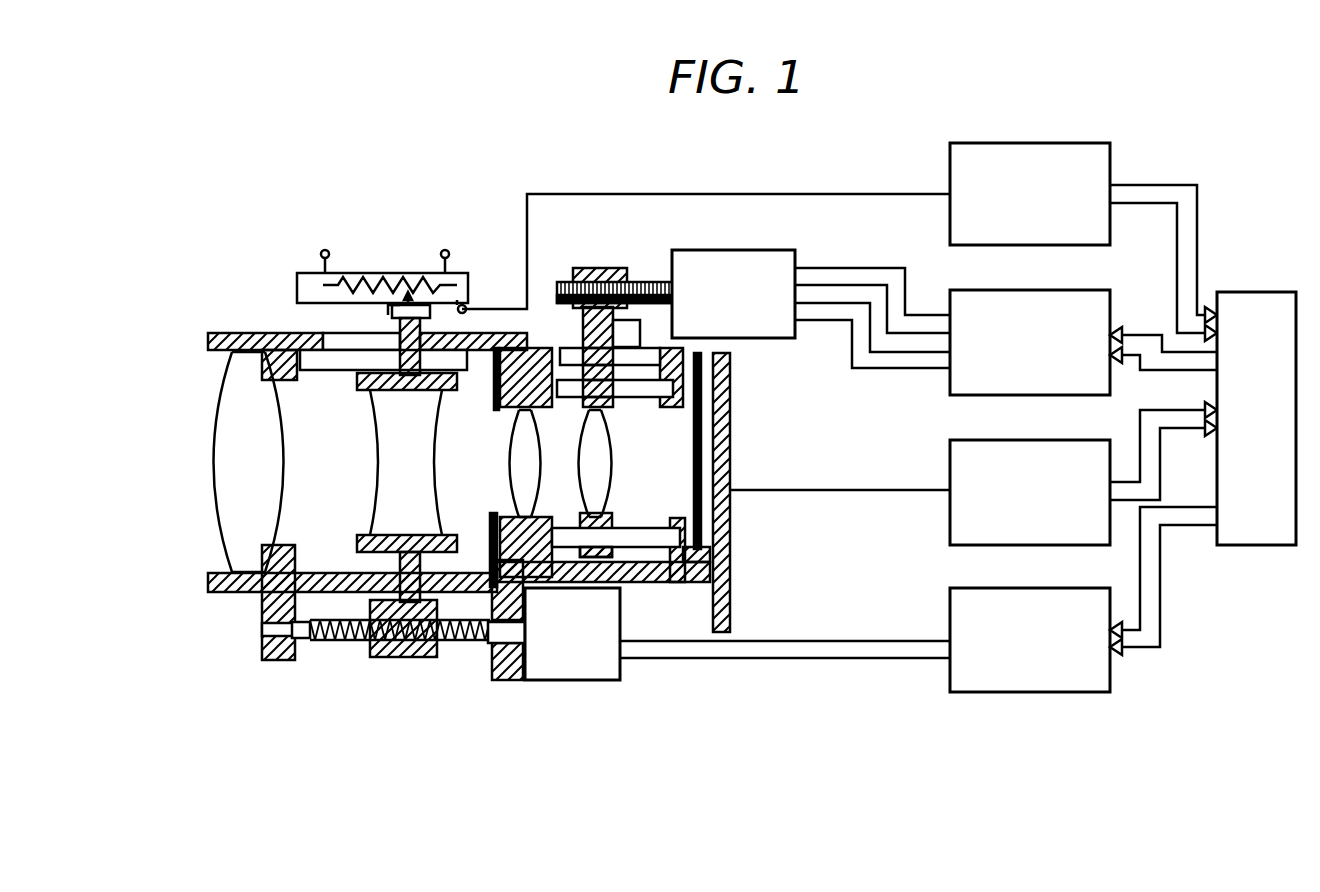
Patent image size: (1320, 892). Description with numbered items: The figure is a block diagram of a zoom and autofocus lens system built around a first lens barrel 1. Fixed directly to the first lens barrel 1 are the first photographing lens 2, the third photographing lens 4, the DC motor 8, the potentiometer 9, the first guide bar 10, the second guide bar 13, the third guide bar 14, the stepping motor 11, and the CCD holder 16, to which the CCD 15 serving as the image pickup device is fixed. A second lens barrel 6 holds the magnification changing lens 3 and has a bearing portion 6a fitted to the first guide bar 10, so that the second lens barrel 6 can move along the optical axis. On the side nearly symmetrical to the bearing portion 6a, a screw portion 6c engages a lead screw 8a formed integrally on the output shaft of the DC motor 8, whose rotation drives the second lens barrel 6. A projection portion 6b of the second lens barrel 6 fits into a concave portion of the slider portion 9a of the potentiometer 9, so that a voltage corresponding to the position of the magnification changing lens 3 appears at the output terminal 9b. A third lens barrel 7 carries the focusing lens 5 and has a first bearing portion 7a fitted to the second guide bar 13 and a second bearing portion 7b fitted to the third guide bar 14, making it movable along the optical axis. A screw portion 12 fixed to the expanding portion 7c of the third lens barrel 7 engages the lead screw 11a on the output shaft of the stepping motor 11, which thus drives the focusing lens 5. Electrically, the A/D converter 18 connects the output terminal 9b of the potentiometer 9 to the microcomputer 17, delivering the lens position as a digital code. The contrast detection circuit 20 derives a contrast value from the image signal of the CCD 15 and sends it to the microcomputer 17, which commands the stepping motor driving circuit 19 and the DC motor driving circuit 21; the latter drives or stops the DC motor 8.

The first lens barrel 1 is at (216, 594).
The first photographing lens 2 is at (204, 470).
The magnification changing lens 3 is at (373, 470).
The third photographing lens 4 is at (506, 470).
The focusing lens 5 is at (588, 475).
The second lens barrel 6 is at (389, 508).
The bearing portion 6a is at (398, 378).
The projection portion 6b is at (407, 300).
The screw portion 6c is at (400, 655).
The third lens barrel 7 is at (578, 405).
The first bearing portion 7a is at (627, 410).
The second bearing portion 7b is at (612, 550).
The expanding portion 7c is at (612, 330).
The DC motor 8 is at (623, 672).
The lead screw 8a is at (335, 645).
The potentiometer 9 is at (307, 276).
The slider portion 9a is at (387, 316).
The output terminal 9b is at (457, 299).
The first guide bar 10 is at (327, 374).
The stepping motor 11 is at (735, 250).
The lead screw 11a is at (651, 281).
The screw portion 12 is at (574, 327).
The second guide bar 13 is at (656, 397).
The third guide bar 14 is at (616, 554).
The CCD 15 is at (731, 462).
The CCD holder 16 is at (737, 412).
The microcomputer 17 is at (1245, 292).
The A/D converter 18 is at (1046, 143).
The stepping motor driving circuit 19 is at (1046, 291).
The contrast detection circuit 20 is at (1046, 441).
The DC motor driving circuit 21 is at (1046, 589).